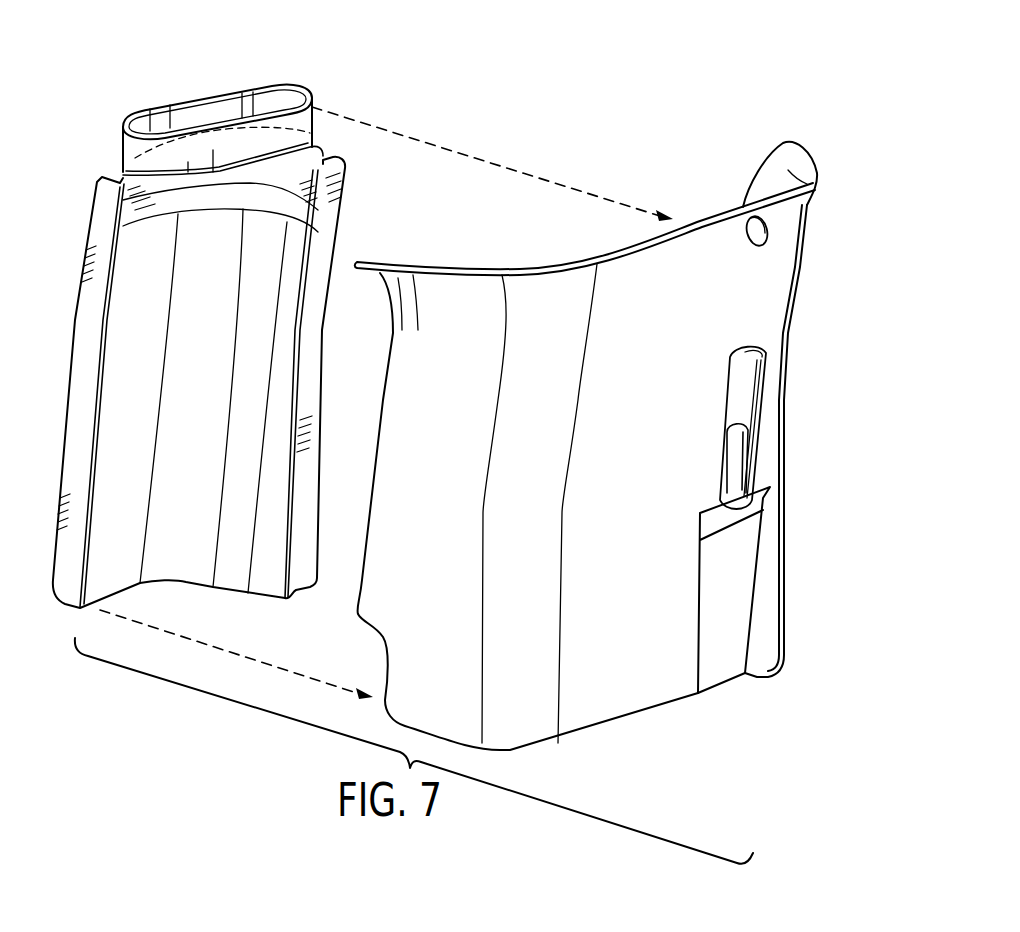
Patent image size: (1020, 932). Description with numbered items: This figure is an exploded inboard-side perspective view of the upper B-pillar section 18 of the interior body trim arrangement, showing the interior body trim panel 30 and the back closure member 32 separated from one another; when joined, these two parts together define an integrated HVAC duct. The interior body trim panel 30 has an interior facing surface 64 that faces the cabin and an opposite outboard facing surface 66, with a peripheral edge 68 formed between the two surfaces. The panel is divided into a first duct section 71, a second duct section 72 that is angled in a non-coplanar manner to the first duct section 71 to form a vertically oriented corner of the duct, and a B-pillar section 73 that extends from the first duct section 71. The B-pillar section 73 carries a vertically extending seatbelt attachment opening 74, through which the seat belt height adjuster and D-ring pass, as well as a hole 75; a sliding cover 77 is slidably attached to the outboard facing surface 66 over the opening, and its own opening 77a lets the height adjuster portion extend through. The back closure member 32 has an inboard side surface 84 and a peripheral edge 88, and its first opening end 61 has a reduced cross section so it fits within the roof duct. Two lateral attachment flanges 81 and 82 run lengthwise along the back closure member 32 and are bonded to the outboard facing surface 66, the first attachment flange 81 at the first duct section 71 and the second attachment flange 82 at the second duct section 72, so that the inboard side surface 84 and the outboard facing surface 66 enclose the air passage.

The upper B-pillar section 18 is at (590, 100).
The interior body trim panel 30 is at (622, 732).
The back closure member 32 is at (211, 600).
The first opening end 61 is at (266, 91).
The interior facing surface 64 is at (633, 417).
The outboard facing surface 66 is at (767, 180).
The peripheral edge 68 is at (692, 225).
The first duct section 71 is at (630, 287).
The second duct section 72 is at (452, 307).
The B-pillar section 73 is at (733, 297).
The seatbelt attachment opening 74 is at (763, 357).
The hole 75 is at (750, 227).
The sliding cover 77 is at (720, 388).
The opening 77a is at (732, 447).
The first attachment flange 81 is at (327, 222).
The second attachment flange 82 is at (82, 283).
The inboard side surface 84 is at (267, 268).
The peripheral edge 88 is at (338, 122).